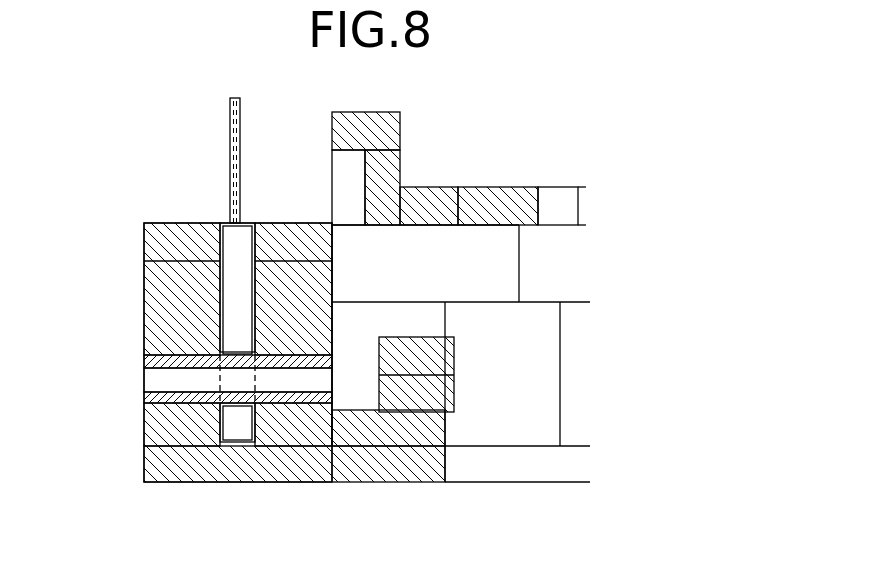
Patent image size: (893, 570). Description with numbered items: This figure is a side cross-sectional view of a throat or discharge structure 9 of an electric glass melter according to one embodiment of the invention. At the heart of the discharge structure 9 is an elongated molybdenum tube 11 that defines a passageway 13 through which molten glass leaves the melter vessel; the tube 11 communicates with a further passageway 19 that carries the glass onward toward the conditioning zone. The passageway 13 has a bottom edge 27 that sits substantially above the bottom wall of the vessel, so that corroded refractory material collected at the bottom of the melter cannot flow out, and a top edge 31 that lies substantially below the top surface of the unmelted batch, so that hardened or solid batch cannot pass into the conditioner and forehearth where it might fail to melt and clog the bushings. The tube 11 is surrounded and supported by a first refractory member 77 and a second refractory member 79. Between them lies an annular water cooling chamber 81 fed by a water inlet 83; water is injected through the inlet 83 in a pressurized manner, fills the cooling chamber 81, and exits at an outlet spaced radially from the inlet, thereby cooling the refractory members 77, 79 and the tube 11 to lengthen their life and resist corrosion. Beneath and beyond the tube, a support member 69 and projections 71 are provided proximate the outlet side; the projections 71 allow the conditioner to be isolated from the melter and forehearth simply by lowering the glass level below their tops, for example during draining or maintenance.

The discharge structure 9 is at (108, 249).
The elongated molybdenum tube 11 is at (172, 390).
The passageway 13 is at (161, 381).
The passageway 19 is at (421, 243).
The bottom edge of aperture 27 is at (191, 393).
The top edge of orifice 31 is at (157, 364).
The support member 69 is at (383, 440).
The projections 71 is at (437, 358).
The first refractory member 77 is at (177, 275).
The second refractory member 79 is at (290, 277).
The water cooling chamber 81 is at (228, 257).
The water inlet 83 is at (232, 127).